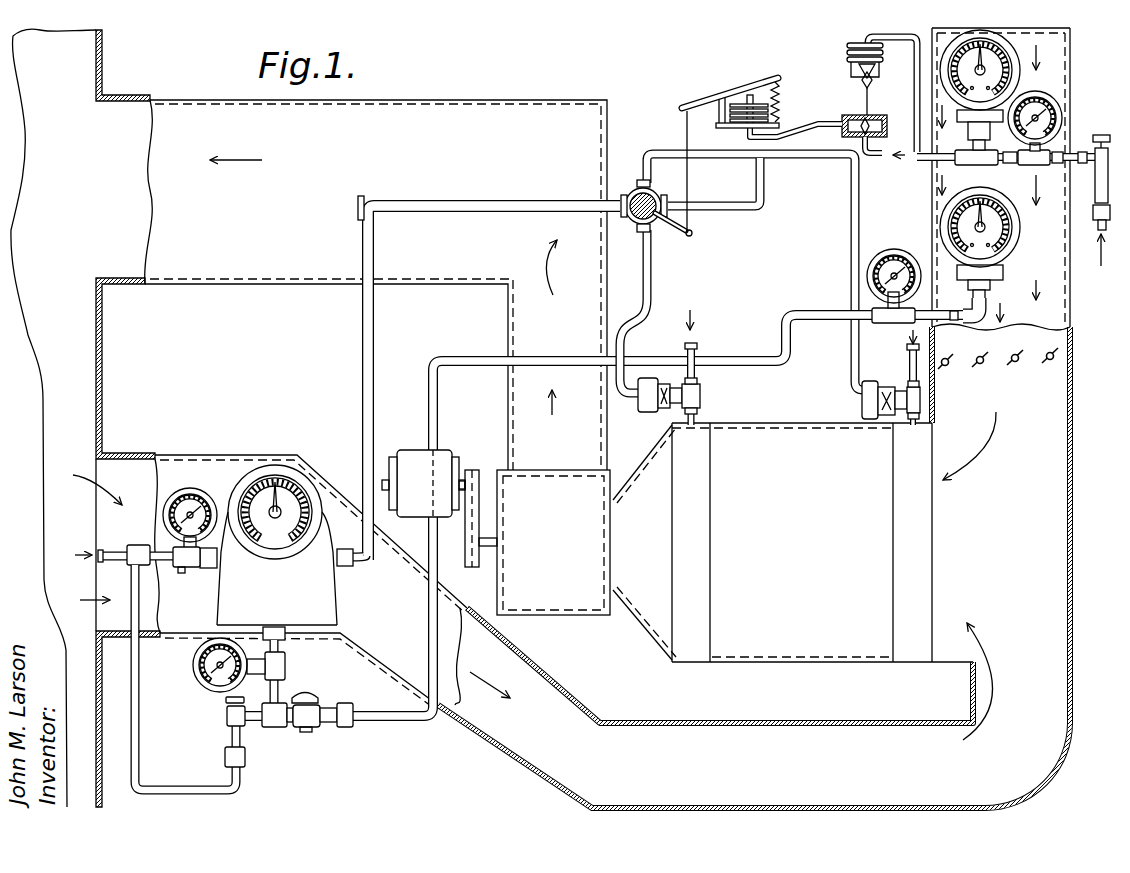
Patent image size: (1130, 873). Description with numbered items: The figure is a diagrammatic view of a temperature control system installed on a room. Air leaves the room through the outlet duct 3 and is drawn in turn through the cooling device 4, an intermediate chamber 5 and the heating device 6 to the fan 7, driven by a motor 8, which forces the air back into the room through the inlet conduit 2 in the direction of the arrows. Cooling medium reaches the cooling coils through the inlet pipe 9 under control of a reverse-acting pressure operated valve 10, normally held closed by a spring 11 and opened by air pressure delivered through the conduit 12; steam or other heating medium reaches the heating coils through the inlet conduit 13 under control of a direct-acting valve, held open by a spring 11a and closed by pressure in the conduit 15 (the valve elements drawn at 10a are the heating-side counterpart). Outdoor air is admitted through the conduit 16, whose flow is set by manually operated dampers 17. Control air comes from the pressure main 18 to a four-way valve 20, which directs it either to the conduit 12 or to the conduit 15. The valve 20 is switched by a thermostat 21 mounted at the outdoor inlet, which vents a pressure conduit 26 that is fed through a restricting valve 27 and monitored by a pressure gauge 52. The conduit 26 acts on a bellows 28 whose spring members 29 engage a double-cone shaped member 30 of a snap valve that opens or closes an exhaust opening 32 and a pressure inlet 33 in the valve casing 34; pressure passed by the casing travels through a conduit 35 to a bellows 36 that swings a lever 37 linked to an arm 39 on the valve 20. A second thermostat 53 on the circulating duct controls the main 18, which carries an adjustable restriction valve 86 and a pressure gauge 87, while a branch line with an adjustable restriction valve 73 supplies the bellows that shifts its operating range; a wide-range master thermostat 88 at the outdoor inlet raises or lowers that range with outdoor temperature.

The inlet conduit 2 is at (248, 286).
The outlet duct 3 is at (527, 743).
The cooling device 4 is at (930, 517).
The intermediate chamber 5 is at (778, 657).
The heating device 6 is at (691, 662).
The fan 7 is at (562, 607).
The motor 8 is at (440, 465).
The inlet pipe 9 is at (909, 357).
The pressure operated valve 10 is at (867, 403).
The valve 10a is at (647, 414).
The spring 11 is at (886, 387).
The spring 11a is at (661, 415).
The conduit 12 is at (850, 262).
The inlet conduit 13 is at (695, 343).
The conduit 15 is at (656, 240).
The conduit 16 is at (1075, 78).
The dampers 17 is at (1040, 362).
The pressure main 18 is at (437, 200).
The four-way valve 20 is at (637, 188).
The thermostat 21 is at (950, 50).
The pressure conduit 26 is at (914, 91).
The restricting valve 27 is at (1093, 200).
The bellows 28 is at (848, 46).
The spring members 29 is at (858, 71).
The double-cone shaped member 30 is at (860, 84).
The exhaust opening 32 is at (848, 118).
The pressure inlet 33 is at (874, 150).
The valve casing 34 is at (888, 128).
The conduit 35 is at (811, 130).
The bellows 36 is at (758, 102).
The lever 37 is at (699, 104).
The arm 39 is at (693, 235).
The pressure gauge 52 is at (1062, 118).
The thermostat 53 is at (338, 592).
The adjustable restriction valve 73 is at (230, 701).
The adjustable restriction valve 86 is at (182, 573).
The pressure gauge 87 is at (199, 490).
The master thermostat 88 is at (971, 226).